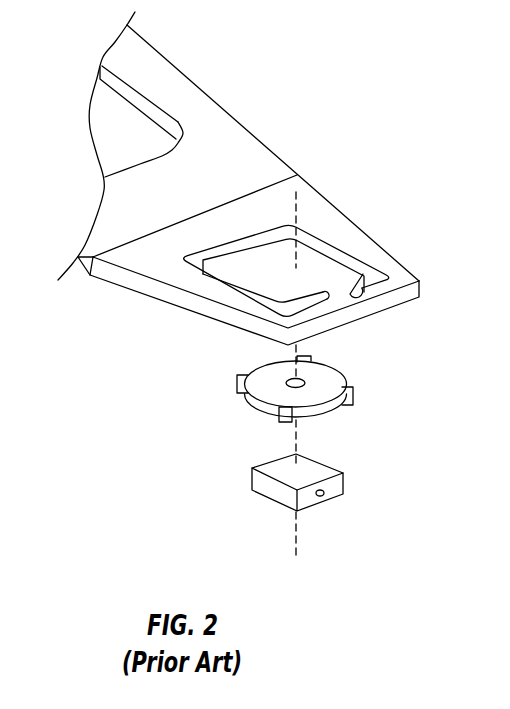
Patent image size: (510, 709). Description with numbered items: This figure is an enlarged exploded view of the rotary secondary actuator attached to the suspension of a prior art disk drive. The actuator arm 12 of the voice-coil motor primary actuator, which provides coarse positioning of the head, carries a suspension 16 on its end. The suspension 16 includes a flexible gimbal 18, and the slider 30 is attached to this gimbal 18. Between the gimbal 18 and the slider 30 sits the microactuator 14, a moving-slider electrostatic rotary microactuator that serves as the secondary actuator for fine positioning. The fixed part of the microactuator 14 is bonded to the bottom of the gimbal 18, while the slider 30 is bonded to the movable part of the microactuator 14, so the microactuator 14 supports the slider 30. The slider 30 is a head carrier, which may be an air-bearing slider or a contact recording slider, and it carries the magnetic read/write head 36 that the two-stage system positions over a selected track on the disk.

The actuator arm 12 is at (173, 72).
The suspension 16 is at (309, 190).
The gimbal 18 is at (317, 267).
The microactuator 14 is at (328, 373).
The slider 30 is at (262, 482).
The read/write head 36 is at (325, 496).